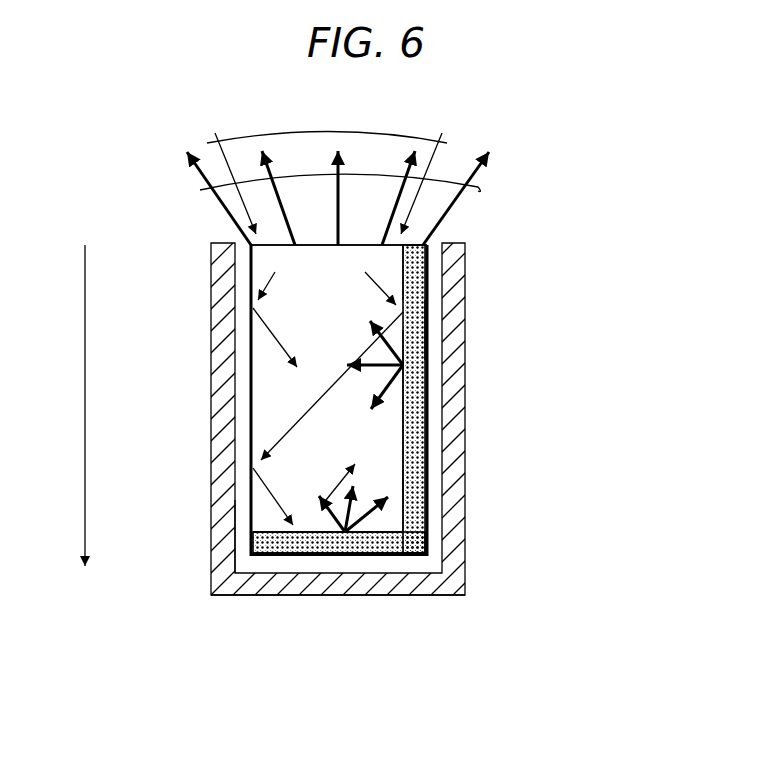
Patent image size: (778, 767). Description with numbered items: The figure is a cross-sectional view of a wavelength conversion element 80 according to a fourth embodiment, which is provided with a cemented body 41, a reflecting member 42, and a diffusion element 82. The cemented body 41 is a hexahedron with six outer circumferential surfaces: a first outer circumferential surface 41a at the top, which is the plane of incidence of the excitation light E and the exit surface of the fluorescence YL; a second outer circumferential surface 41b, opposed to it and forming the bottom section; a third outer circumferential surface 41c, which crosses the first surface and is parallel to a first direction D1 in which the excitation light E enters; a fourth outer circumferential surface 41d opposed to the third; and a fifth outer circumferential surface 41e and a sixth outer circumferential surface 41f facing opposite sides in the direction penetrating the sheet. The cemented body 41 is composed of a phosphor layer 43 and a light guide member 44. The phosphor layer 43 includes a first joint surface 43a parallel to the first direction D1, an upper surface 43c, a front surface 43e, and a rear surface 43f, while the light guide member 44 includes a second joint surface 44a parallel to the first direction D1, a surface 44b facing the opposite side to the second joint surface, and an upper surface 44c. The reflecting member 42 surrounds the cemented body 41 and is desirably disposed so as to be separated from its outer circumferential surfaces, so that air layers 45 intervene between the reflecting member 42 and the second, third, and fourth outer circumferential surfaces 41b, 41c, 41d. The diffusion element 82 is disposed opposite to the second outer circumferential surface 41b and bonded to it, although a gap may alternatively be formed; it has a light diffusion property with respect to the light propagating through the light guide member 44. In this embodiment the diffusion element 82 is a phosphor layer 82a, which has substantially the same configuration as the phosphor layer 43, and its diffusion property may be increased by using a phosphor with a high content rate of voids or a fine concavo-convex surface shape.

The wavelength conversion element 80 is at (551, 170).
The cemented body 41 is at (349, 468).
The first outer circumferential surface 41a is at (276, 243).
The second outer circumferential surface 41b is at (255, 548).
The third outer circumferential surface 41c is at (444, 453).
The fourth outer circumferential surface 41d is at (252, 377).
The fifth outer circumferential surface 41e is at (401, 514).
The sixth outer circumferential surface 41f is at (387, 263).
The reflecting member 42 is at (460, 310).
The phosphor layer 43 is at (420, 528).
The first joint surface 43a is at (401, 418).
The upper surface 43c is at (420, 243).
The front surface 43e is at (421, 490).
The rear surface 43f is at (420, 326).
The light guide member 44 is at (370, 520).
The second joint surface 44a is at (428, 393).
The surface facing opposite to second joint surface 44b is at (192, 400).
The upper surface 44c is at (372, 243).
The air layer 45 is at (242, 524).
The diffusion element 82 is at (263, 543).
The phosphor layer 82a is at (321, 606).
The excitation light E is at (447, 143).
The fluorescence YL is at (200, 183).
The first direction D1 is at (83, 365).